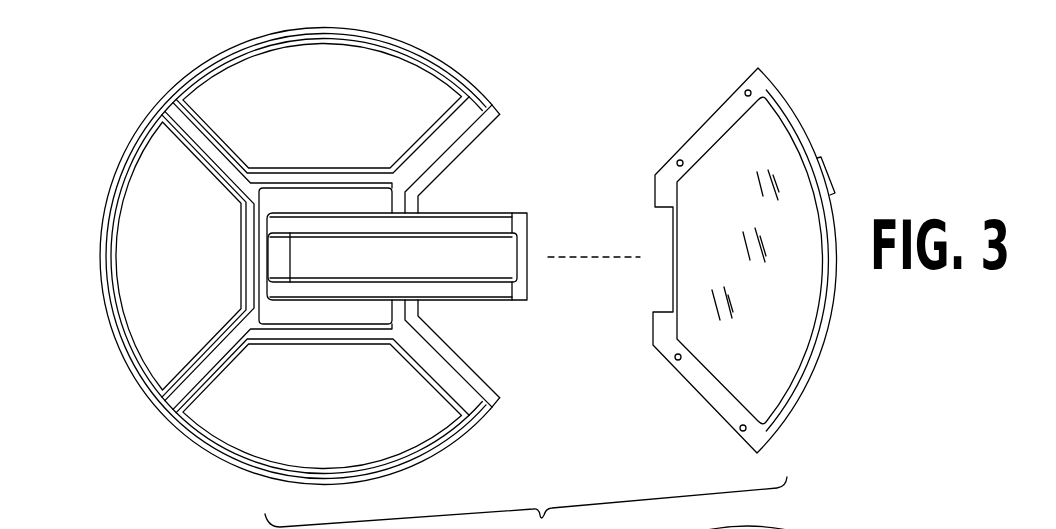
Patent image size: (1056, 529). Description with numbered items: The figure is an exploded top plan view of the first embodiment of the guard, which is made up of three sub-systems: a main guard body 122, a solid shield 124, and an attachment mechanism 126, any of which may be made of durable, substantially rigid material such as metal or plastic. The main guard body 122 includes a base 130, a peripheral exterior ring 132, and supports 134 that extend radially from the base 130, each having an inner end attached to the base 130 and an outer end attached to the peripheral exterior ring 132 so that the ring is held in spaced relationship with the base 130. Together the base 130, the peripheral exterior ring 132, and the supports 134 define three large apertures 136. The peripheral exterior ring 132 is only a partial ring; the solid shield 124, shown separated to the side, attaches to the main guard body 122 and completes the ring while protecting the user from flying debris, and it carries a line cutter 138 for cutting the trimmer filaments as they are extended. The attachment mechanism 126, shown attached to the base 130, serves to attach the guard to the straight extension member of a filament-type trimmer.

The main guard body 122 is at (476, 72).
The solid shield 124 is at (836, 127).
The attachment mechanism 126 is at (466, 214).
The base 130 is at (323, 346).
The peripheral exterior ring 132 is at (158, 407).
The support 134 is at (232, 130).
The apertures 136 is at (340, 122).
The line cutter 138 is at (845, 175).